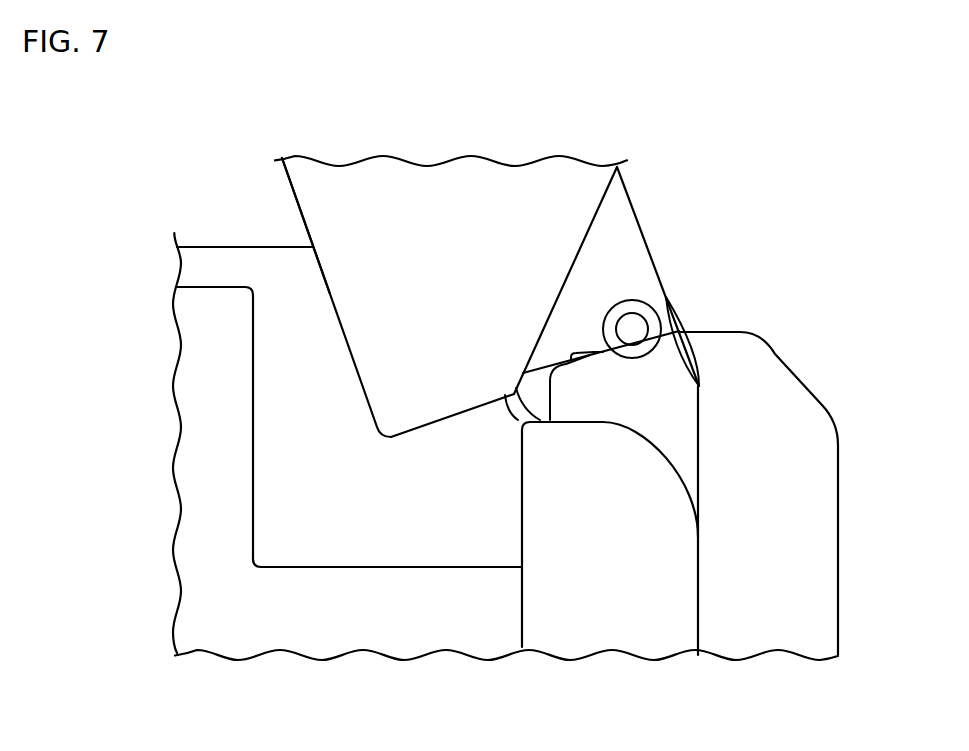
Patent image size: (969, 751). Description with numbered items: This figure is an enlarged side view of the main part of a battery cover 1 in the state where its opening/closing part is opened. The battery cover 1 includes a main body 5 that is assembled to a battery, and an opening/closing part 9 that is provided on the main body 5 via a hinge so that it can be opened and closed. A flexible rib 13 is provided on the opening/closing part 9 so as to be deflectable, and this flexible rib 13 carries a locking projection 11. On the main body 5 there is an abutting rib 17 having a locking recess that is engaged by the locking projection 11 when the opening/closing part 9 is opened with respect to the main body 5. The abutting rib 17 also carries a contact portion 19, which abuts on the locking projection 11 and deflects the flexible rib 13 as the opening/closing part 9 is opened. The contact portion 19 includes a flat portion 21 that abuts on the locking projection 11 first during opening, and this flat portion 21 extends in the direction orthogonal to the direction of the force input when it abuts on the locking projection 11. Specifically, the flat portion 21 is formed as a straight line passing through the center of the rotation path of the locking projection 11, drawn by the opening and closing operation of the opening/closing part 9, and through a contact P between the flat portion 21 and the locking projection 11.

The battery cover 1 is at (423, 154).
The main body 5 is at (405, 517).
The opening/closing part 9 is at (320, 207).
The locking projection 11 is at (632, 323).
The flexible rib 13 is at (615, 225).
The abutting rib 17 is at (610, 400).
The contact portion 19 is at (572, 353).
The flat portion 21 is at (667, 320).
The contact P is at (634, 345).